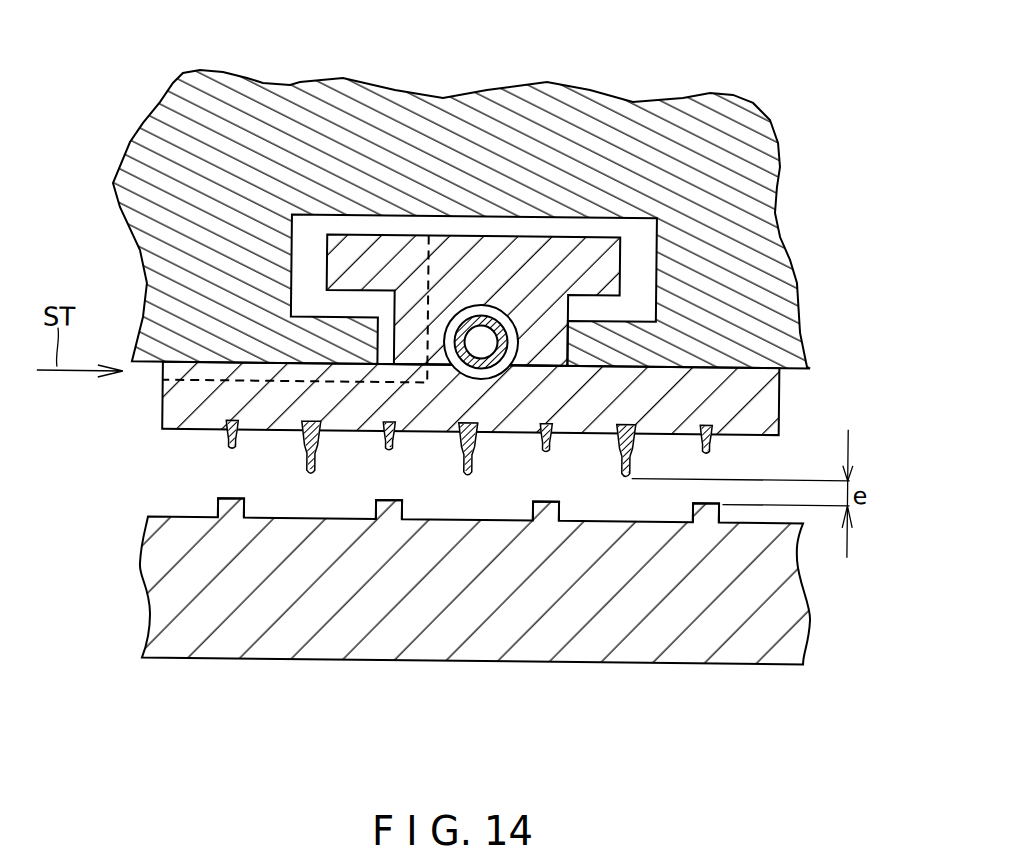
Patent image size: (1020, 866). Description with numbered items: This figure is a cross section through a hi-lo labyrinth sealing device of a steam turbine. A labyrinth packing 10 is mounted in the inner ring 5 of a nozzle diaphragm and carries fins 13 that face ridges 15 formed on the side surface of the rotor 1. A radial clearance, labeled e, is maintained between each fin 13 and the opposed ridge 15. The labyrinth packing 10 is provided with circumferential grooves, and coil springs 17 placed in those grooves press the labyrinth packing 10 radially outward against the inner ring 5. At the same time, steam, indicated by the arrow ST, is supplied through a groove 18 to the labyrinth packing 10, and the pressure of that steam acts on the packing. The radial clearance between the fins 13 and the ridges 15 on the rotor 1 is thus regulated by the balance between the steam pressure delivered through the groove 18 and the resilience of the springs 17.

The rotor 1 is at (414, 652).
The inner ring of a nozzle diaphragm 5 is at (639, 136).
The labyrinth packing 10 is at (778, 399).
The fin 13 is at (473, 460).
The ridge 15 is at (232, 503).
The coil spring 17 is at (481, 318).
The groove 18 is at (192, 385).